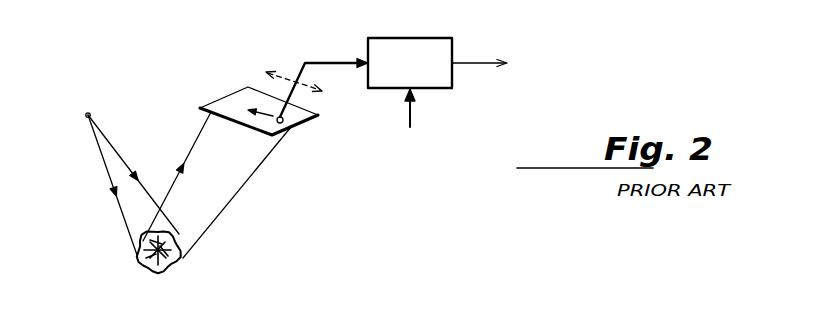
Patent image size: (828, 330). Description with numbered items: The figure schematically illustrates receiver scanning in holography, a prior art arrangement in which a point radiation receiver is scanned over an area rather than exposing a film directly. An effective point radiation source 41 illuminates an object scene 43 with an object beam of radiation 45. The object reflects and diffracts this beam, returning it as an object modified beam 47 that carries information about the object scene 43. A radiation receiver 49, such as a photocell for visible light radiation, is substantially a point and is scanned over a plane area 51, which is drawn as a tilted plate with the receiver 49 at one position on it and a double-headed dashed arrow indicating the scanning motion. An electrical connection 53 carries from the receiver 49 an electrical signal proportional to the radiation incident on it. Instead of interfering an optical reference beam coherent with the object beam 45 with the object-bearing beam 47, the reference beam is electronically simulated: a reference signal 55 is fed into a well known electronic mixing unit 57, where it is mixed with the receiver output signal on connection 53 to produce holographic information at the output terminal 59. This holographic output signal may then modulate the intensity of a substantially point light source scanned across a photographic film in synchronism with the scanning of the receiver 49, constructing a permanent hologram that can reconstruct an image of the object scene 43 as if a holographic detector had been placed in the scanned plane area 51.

The point radiation source 41 is at (90, 114).
The object scene 43 is at (170, 266).
The object beam of radiation 45 is at (133, 207).
The object modified beam 47 is at (240, 165).
The radiation receiver 49 is at (284, 122).
The plane area 51 is at (233, 103).
The electrical connection 53 is at (328, 62).
The reference signal 55 is at (415, 112).
The electronic mixing unit 57 is at (404, 50).
The output terminal 59 is at (472, 62).